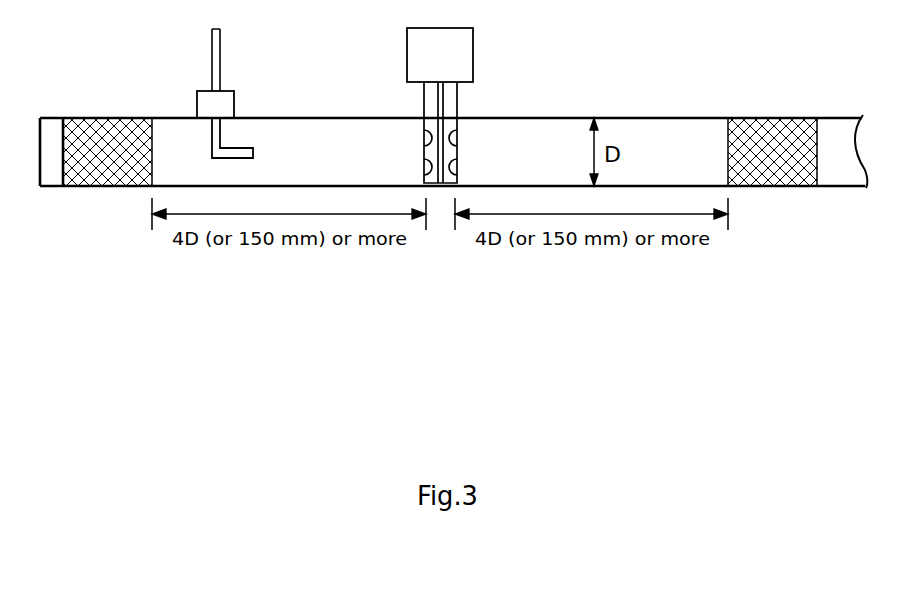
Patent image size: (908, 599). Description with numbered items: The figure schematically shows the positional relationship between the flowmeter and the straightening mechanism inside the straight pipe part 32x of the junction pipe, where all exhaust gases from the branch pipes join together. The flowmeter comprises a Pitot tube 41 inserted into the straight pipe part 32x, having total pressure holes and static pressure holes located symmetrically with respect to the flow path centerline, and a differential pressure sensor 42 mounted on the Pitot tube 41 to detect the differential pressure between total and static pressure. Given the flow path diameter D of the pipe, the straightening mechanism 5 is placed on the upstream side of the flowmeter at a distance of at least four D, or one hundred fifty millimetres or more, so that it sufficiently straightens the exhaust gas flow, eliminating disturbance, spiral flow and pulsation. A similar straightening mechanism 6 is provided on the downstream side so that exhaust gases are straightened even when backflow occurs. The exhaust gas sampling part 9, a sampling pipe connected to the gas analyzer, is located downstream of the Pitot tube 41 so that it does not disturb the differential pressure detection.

The straight pipe part 32x is at (650, 118).
The straightening mechanism 6 is at (108, 118).
The straightening mechanism 5 is at (773, 118).
The exhaust gas sampling part 9 is at (241, 148).
The differential pressure sensor 42 is at (475, 52).
The Pitot tube 41 is at (460, 152).